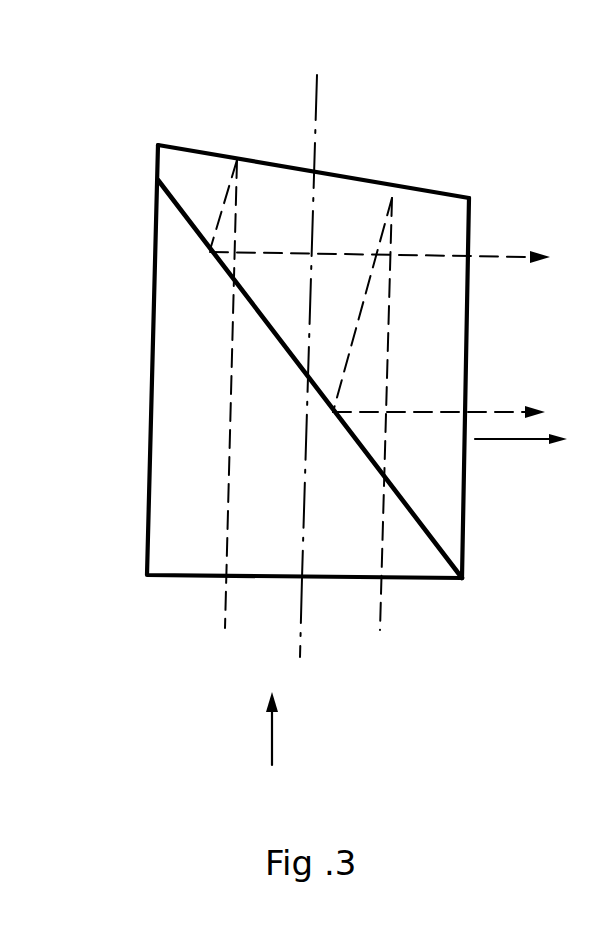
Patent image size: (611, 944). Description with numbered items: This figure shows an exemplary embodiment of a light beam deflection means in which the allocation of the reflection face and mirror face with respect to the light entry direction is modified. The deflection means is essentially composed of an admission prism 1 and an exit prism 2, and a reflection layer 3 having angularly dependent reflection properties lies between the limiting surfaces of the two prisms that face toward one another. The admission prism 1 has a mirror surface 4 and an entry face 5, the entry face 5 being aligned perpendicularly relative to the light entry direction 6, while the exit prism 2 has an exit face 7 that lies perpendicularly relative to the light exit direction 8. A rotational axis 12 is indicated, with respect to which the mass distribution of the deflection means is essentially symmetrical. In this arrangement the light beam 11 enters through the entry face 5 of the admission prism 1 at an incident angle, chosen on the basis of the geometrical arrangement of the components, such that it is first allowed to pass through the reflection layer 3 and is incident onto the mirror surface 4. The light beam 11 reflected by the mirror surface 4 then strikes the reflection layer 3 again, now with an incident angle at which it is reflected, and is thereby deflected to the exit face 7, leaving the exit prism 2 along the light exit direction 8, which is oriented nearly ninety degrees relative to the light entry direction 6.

The admission prism 1 is at (168, 558).
The exit prism 2 is at (378, 306).
The reflection layer 3 is at (262, 321).
The mirror surface 4 is at (380, 180).
The entry face 5 is at (330, 580).
The light entry direction 6 is at (272, 720).
The exit face 7 is at (467, 315).
The light exit direction 8 is at (513, 437).
The light beam 11 is at (225, 595).
The rotational axis 12 is at (317, 102).